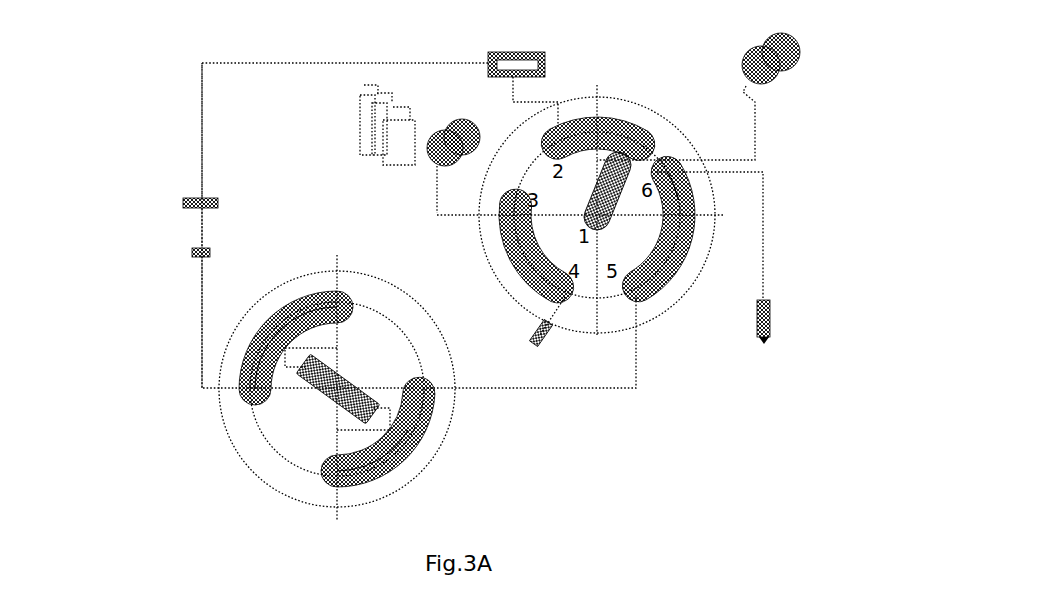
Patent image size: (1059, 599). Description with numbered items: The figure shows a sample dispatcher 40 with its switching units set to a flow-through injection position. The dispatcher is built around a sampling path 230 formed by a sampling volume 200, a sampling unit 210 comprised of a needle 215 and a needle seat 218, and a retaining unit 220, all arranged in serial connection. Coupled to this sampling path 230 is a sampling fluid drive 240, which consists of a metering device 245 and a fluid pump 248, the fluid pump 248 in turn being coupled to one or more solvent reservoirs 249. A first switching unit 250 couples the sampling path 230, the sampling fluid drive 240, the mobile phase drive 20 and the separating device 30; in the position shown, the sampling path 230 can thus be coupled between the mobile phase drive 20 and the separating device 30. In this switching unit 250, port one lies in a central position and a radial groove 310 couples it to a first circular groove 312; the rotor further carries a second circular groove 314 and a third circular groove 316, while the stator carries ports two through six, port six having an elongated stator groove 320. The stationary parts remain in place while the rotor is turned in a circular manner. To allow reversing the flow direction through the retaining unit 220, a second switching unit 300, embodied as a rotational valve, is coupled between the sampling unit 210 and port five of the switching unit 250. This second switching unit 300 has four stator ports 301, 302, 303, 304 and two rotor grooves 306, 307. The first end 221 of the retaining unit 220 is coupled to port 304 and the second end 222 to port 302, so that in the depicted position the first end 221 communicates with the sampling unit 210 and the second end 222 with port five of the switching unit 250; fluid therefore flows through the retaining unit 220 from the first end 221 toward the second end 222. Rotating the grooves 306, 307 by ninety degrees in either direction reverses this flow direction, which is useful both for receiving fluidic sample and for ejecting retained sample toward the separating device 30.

The mobile phase drive 20 is at (790, 48).
The separating device 30 is at (770, 308).
The sample dispatcher 40 is at (150, 150).
The sampling volume 200 is at (208, 198).
The sampling unit 210 is at (247, 238).
The needle 215 is at (198, 227).
The needle seat 218 is at (196, 252).
The retaining unit 220 is at (344, 383).
The first end 221 is at (338, 341).
The second end 222 is at (334, 440).
The sampling path 230 is at (160, 330).
The sampling fluid drive 240 is at (402, 52).
The metering device 245 is at (520, 62).
The fluid pump 248 is at (450, 125).
The solvent reservoirs 249 is at (358, 138).
The switching unit 250 is at (662, 300).
The second switching unit 300 is at (440, 437).
The port 301 is at (432, 374).
The port 302 is at (338, 478).
The port 303 is at (255, 393).
The port 304 is at (345, 302).
The groove 306 is at (420, 452).
The groove 307 is at (300, 310).
The radial groove 310 is at (620, 193).
The first circular groove 312 is at (607, 125).
The second circular groove 314 is at (520, 258).
The third circular groove 316 is at (680, 250).
The elongated stator groove 320 is at (688, 183).